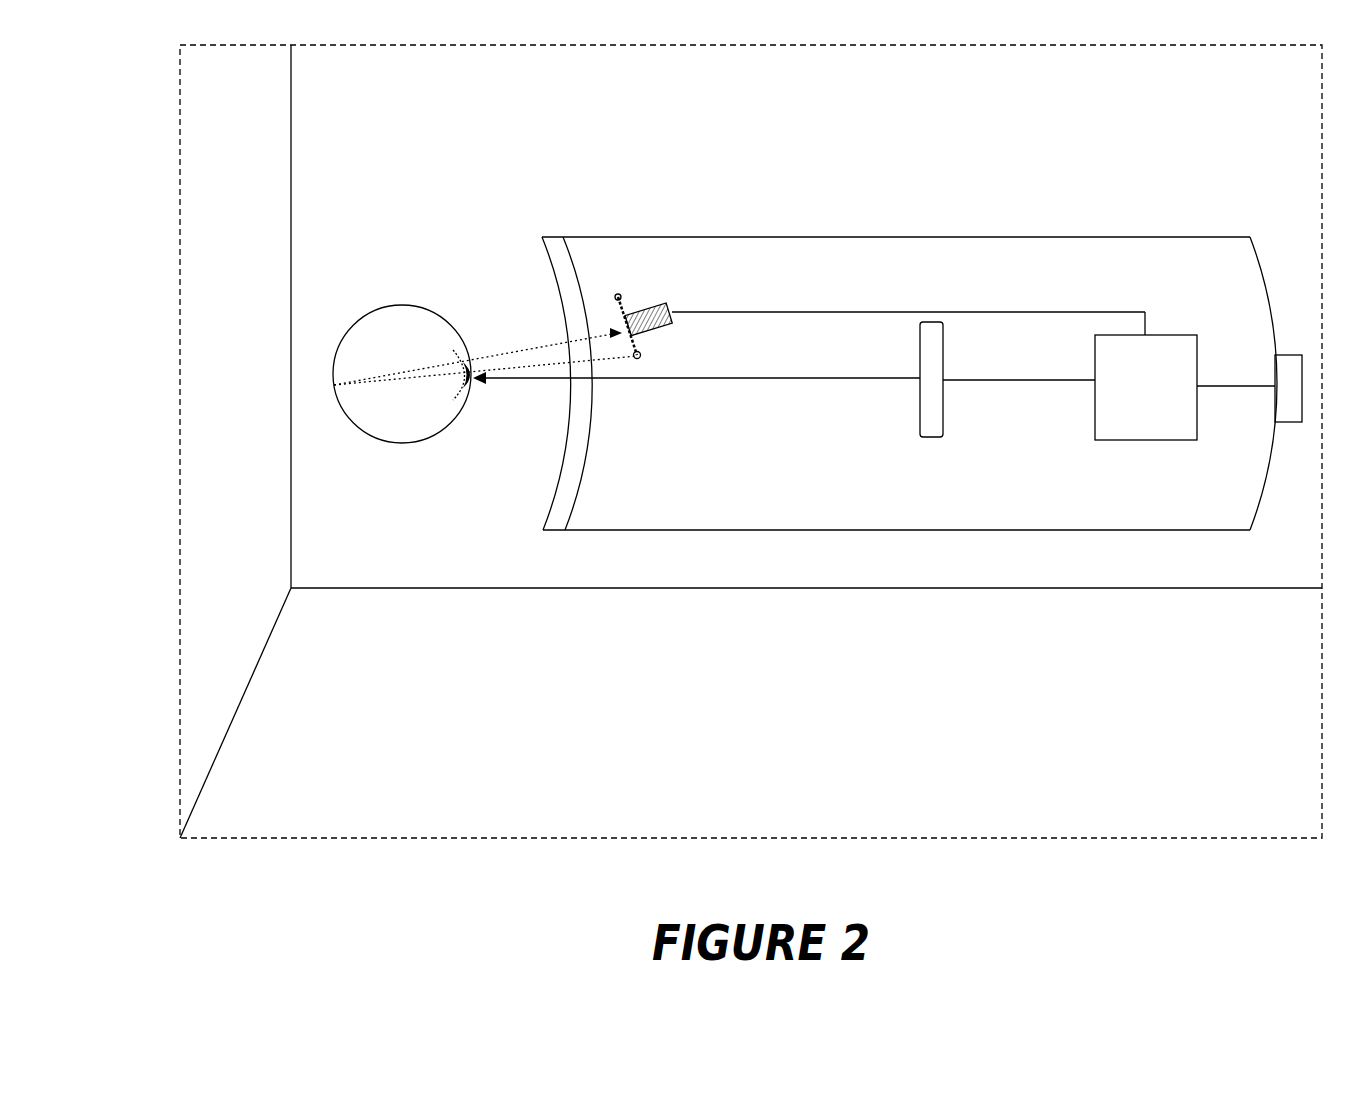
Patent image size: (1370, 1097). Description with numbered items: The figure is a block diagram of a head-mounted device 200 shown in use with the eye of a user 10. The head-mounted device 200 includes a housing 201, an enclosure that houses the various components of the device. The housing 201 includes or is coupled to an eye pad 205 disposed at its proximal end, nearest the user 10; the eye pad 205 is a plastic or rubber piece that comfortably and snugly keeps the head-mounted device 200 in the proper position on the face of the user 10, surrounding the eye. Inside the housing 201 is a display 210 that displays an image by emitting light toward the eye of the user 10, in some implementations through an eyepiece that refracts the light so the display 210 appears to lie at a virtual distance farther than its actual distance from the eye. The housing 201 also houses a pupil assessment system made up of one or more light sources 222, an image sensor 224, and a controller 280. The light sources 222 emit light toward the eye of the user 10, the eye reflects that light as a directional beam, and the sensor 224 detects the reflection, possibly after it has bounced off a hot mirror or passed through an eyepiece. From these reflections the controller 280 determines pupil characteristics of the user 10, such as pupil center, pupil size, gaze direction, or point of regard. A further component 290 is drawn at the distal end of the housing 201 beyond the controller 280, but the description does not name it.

The user 10 is at (455, 320).
The head-mounted device 200 is at (684, 181).
The housing 201 is at (1097, 531).
The eye pad 205 is at (556, 237).
The display 210 is at (943, 376).
The light sources 222 is at (625, 286).
The image sensor 224 is at (672, 323).
The controller 280 is at (1163, 393).
The light source 290 is at (1280, 353).